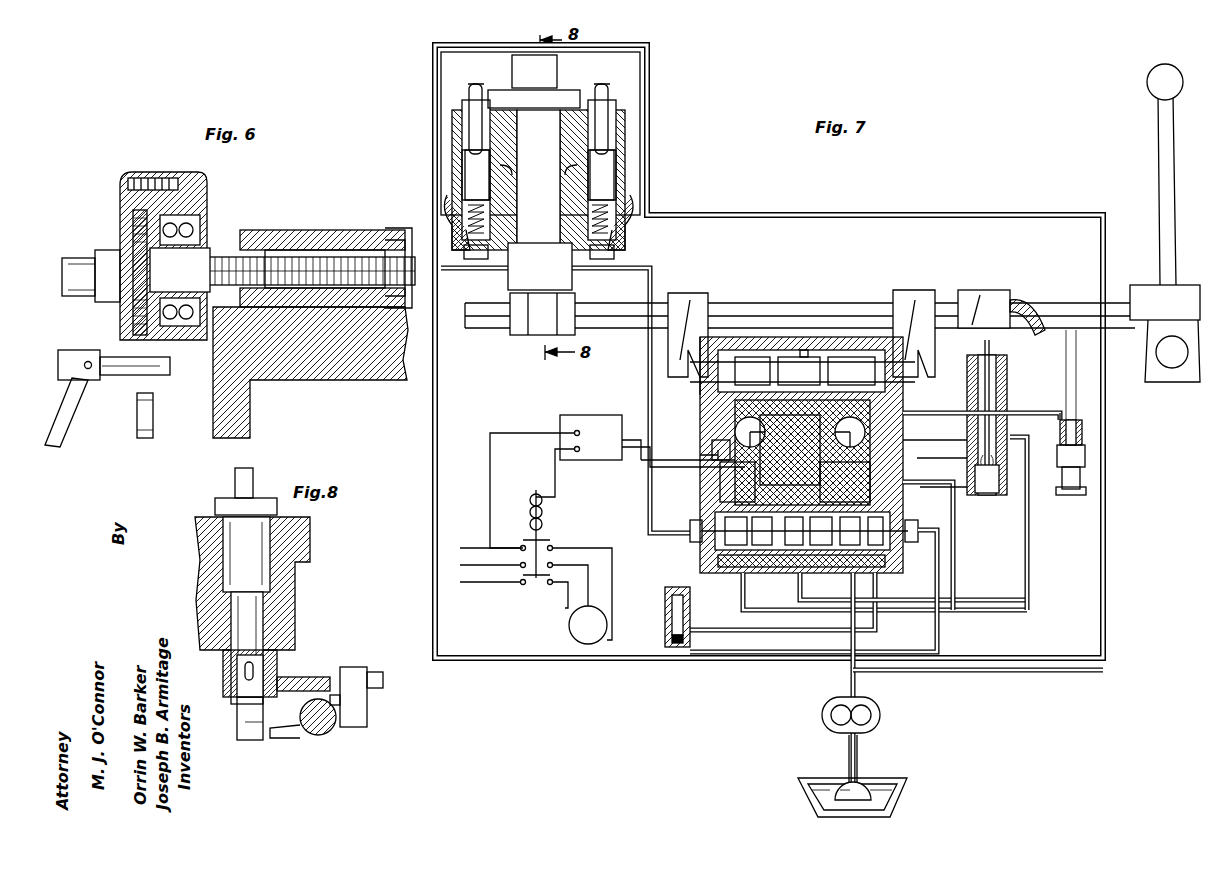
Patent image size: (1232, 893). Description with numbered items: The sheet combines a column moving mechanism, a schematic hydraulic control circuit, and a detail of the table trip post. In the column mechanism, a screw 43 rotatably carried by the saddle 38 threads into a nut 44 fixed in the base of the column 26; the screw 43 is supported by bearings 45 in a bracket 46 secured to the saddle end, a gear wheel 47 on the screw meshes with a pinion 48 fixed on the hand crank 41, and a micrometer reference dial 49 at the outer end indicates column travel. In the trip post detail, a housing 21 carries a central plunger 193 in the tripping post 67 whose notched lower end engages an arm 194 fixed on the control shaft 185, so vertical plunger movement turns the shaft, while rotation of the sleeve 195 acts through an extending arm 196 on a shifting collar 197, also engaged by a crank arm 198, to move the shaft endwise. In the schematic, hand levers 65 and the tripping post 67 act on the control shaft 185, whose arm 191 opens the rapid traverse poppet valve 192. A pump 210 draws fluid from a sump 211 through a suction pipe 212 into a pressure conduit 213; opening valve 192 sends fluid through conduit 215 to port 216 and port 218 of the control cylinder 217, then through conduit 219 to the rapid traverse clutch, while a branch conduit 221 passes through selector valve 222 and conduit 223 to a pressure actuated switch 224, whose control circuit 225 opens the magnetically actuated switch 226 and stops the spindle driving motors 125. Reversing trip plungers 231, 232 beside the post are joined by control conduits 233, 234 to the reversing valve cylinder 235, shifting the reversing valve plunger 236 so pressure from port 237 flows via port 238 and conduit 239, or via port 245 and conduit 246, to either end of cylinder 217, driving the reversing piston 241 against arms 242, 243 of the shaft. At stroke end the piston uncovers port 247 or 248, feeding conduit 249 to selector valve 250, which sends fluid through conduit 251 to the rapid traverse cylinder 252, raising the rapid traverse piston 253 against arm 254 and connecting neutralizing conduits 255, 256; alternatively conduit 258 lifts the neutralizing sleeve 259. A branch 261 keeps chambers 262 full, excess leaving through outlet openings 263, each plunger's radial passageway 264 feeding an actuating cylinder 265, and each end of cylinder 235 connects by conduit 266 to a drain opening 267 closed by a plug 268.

In FIG. 6, the saddle 38 is at (318, 368).
In FIG. 6, the nut 44 is at (318, 245).
In FIG. 6, the column 26 is at (358, 230).
In FIG. 6, the screw 43 is at (232, 252).
In FIG. 6, the bracket 46 is at (175, 185).
In FIG. 6, the gear wheel 47 is at (130, 214).
In FIG. 6, the bearings 45 is at (198, 224).
In FIG. 6, the micrometer reference dial 49 is at (100, 236).
In FIG. 6, the hand crank 41 is at (62, 418).
In FIG. 6, the pinion 48 is at (145, 432).
In FIG. 8, the valve housing 21 is at (292, 566).
In FIG. 8, the sleeve 195 is at (256, 584).
In FIG. 7, the sleeve 195 is at (560, 96).
In FIG. 8, the central plunger 193 is at (250, 610).
In FIG. 7, the central plunger 193 is at (540, 68).
In FIG. 8, the tripping post 67 is at (208, 502).
In FIG. 7, the tripping post 67 is at (506, 83).
In FIG. 8, the arm 194 is at (280, 740).
In FIG. 8, the extending arm 196 is at (316, 677).
In FIG. 8, the control shaft 185 is at (325, 738).
In FIG. 7, the control shaft 185 is at (785, 300).
In FIG. 8, the shifting collar 197 is at (338, 728).
In FIG. 8, the crank arm 198 is at (372, 712).
In FIG. 7, the branch 261 is at (808, 216).
In FIG. 7, the control conduit 233 is at (436, 412).
In FIG. 7, the control conduit 234 is at (648, 386).
In FIG. 7, the reversing trip plunger 231 is at (468, 108).
In FIG. 7, the reversing trip plunger 232 is at (612, 108).
In FIG. 7, the outlet openings 263 is at (568, 165).
In FIG. 7, the chambers 262 is at (462, 165).
In FIG. 7, the radial passageway 264 is at (448, 205).
In FIG. 7, the actuating cylinder 265 is at (500, 230).
In FIG. 7, the arm 242 is at (688, 296).
In FIG. 7, the arm 243 is at (908, 293).
In FIG. 7, the arm 254 is at (985, 293).
In FIG. 7, the laterally projecting arm 191 is at (1045, 335).
In FIG. 7, the hand lever 65 is at (1146, 76).
In FIG. 7, the control cylinder 217 is at (780, 338).
In FIG. 7, the port 248 is at (905, 382).
In FIG. 7, the port 247 is at (753, 371).
In FIG. 7, the port 216 is at (799, 371).
In FIG. 7, the port 218 is at (811, 362).
In FIG. 7, the conduit 249 is at (851, 371).
In FIG. 7, the branch conduit 221 is at (759, 432).
In FIG. 7, the selector valve 250 is at (845, 448).
In FIG. 7, the conduit 219 is at (790, 450).
In FIG. 7, the port 238 is at (745, 482).
In FIG. 7, the port 245 is at (835, 482).
In FIG. 7, the selector valve 222 is at (710, 438).
In FIG. 7, the conduit 239 is at (712, 452).
In FIG. 7, the conduit 223 is at (640, 470).
In FIG. 7, the reversing piston 241 is at (702, 393).
In FIG. 7, the port 237 is at (805, 546).
In FIG. 7, the reversing valve cylinder 235 is at (702, 516).
In FIG. 7, the reversing valve plunger 236 is at (885, 591).
In FIG. 7, the conduit 266 is at (858, 601).
In FIG. 7, the neutralizing conduit 256 is at (1027, 572).
In FIG. 7, the neutralizing conduit 255 is at (953, 552).
In FIG. 7, the pressure conduit 213 is at (830, 592).
In FIG. 7, the pump 210 is at (882, 712).
In FIG. 7, the suction pipe 212 is at (860, 754).
In FIG. 7, the sump 211 is at (905, 790).
In FIG. 7, the drain opening 267 is at (665, 618).
In FIG. 7, the plug 268 is at (678, 650).
In FIG. 7, the rapid traverse cylinder 252 is at (967, 408).
In FIG. 7, the rapid traverse piston 253 is at (990, 493).
In FIG. 7, the conduit 246 is at (905, 428).
In FIG. 7, the neutralizing sleeve 259 is at (967, 440).
In FIG. 7, the conduit 258 is at (917, 460).
In FIG. 7, the conduit 251 is at (928, 508).
In FIG. 7, the conduit 215 is at (1023, 413).
In FIG. 7, the rapid traverse poppet valve 192 is at (1085, 428).
In FIG. 7, the pressure actuated switch 224 is at (592, 420).
In FIG. 7, the control circuit 225 is at (507, 432).
In FIG. 7, the magnetically actuated switch 226 is at (550, 542).
In FIG. 7, the spindle driving motor 125 is at (569, 626).